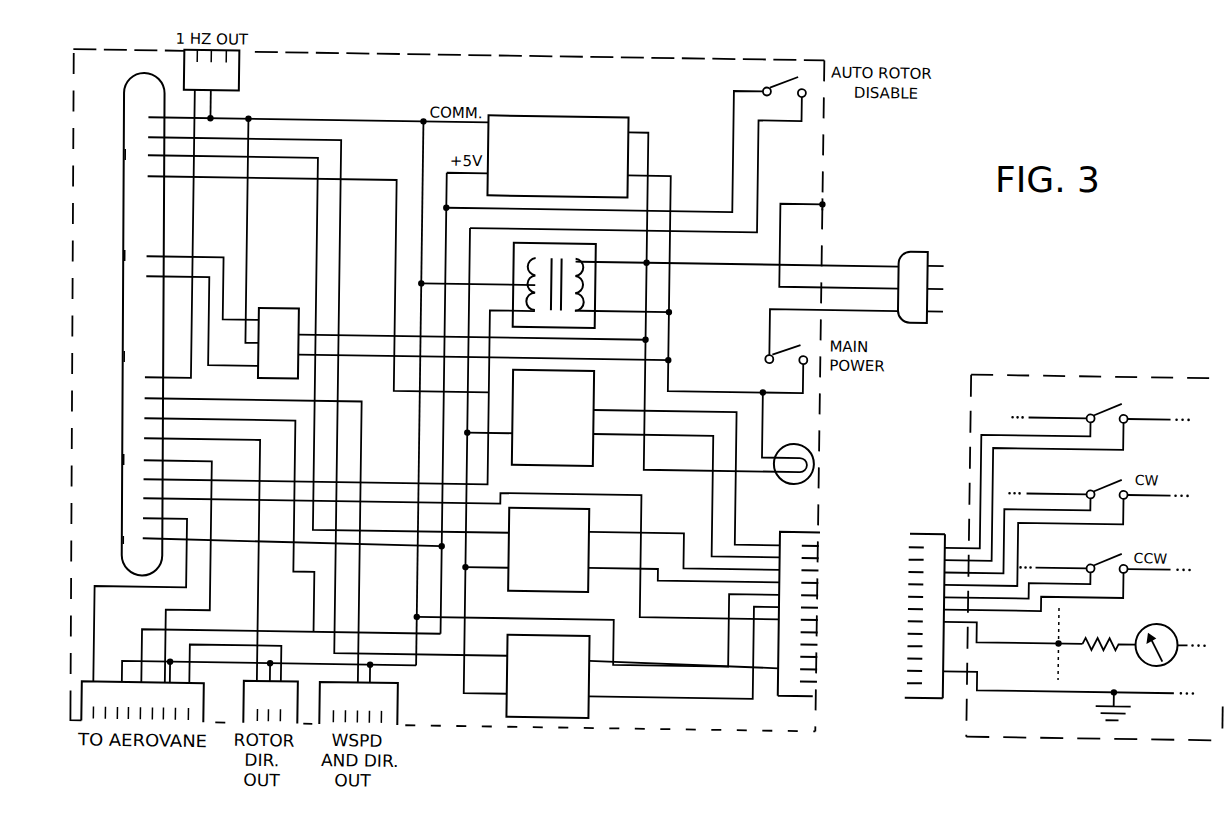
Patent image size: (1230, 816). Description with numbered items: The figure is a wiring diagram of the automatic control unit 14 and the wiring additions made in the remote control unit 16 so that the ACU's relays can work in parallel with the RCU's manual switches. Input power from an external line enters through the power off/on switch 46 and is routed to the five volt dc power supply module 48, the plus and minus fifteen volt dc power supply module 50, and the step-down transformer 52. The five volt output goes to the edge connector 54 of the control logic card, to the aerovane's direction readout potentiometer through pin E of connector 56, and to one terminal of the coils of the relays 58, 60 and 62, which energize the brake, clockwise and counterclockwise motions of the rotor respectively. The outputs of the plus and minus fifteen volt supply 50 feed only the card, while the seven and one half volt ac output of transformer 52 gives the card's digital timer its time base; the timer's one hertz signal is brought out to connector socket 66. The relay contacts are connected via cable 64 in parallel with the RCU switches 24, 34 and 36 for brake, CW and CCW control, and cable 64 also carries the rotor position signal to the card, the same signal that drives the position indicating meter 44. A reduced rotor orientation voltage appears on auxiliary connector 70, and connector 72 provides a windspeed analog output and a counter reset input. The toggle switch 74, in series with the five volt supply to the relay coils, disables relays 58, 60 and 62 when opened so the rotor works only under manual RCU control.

The automatic control unit 14 is at (826, 163).
The remote control unit 16 is at (1131, 360).
The switch 24 is at (1110, 395).
The switch 34 is at (1111, 471).
The switch 36 is at (1112, 546).
The rotational position indicating meter 44 is at (1151, 612).
The power off/on switch 46 is at (790, 350).
The 5 v dc power supply module 48 is at (541, 108).
The ±15 v dc power supply module 50 is at (271, 304).
The step-down transformer 52 is at (595, 235).
The edge connector 54 is at (124, 166).
The connector 56 is at (110, 680).
The relay 58 is at (593, 361).
The relay 60 is at (592, 499).
The relay 62 is at (598, 655).
The cable 64 is at (952, 540).
The connector socket 66 is at (243, 58).
The auxiliary connector 70 is at (310, 677).
The connector 72 is at (408, 677).
The toggle switch 74 is at (775, 73).